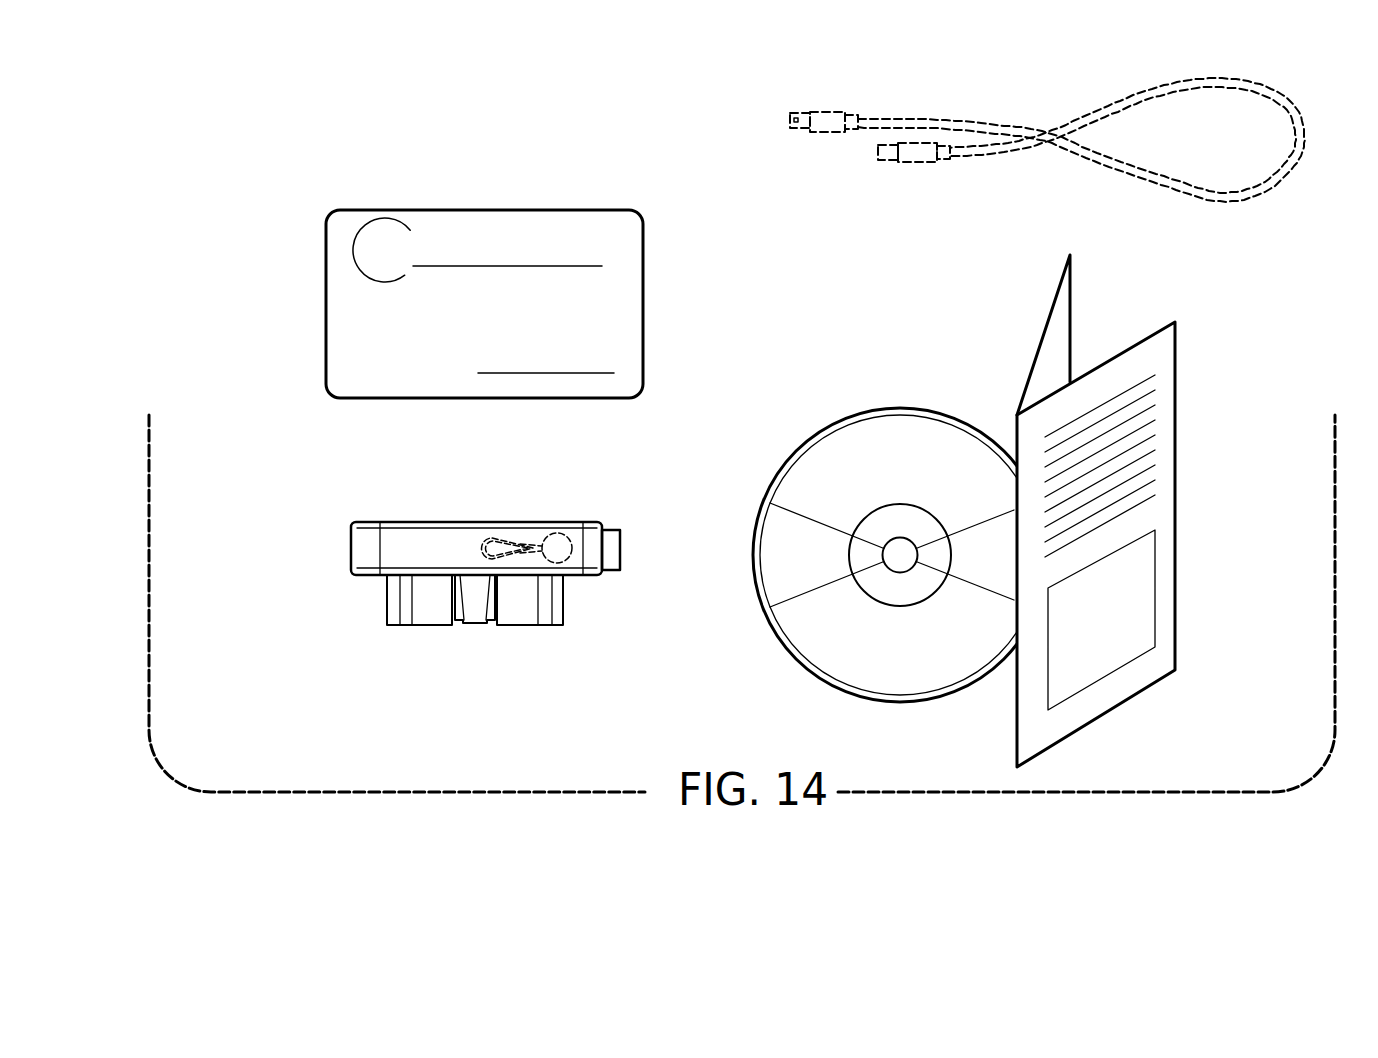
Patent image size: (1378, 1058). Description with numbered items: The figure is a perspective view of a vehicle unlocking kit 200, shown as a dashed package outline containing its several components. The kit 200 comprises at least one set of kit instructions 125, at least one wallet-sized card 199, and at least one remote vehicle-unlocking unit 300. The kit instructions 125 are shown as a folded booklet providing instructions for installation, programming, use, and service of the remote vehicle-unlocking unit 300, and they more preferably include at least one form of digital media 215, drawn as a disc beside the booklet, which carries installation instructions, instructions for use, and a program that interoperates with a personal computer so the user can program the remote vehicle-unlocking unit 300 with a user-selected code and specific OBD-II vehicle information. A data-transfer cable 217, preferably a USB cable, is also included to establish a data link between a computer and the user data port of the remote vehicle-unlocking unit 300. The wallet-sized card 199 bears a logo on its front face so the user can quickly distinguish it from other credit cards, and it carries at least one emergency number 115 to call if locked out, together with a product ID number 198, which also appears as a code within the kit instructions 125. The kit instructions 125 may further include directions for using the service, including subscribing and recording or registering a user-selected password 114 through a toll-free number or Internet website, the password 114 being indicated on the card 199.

The vehicle unlocking kit 200 is at (171, 790).
The data-transfer cable 217 is at (1288, 100).
The wallet-sized card 199 is at (512, 280).
The emergency number 115 is at (402, 328).
The product ID number 198 is at (367, 360).
The user-selected password 114 is at (592, 348).
The remote vehicle-unlocking unit 300 is at (333, 507).
The digital media 215 is at (818, 468).
The kit instructions 125 is at (1175, 505).